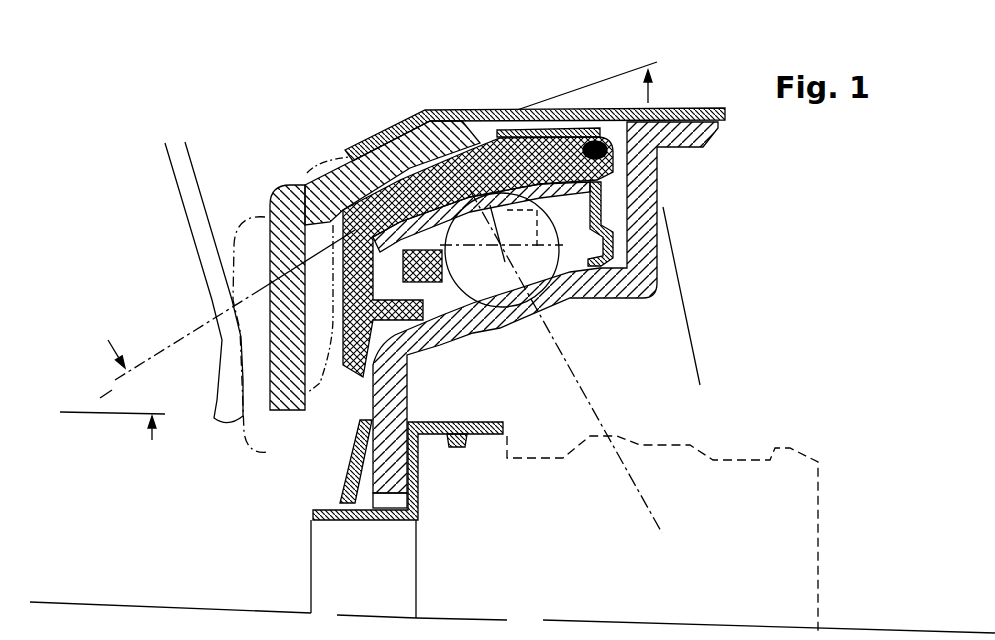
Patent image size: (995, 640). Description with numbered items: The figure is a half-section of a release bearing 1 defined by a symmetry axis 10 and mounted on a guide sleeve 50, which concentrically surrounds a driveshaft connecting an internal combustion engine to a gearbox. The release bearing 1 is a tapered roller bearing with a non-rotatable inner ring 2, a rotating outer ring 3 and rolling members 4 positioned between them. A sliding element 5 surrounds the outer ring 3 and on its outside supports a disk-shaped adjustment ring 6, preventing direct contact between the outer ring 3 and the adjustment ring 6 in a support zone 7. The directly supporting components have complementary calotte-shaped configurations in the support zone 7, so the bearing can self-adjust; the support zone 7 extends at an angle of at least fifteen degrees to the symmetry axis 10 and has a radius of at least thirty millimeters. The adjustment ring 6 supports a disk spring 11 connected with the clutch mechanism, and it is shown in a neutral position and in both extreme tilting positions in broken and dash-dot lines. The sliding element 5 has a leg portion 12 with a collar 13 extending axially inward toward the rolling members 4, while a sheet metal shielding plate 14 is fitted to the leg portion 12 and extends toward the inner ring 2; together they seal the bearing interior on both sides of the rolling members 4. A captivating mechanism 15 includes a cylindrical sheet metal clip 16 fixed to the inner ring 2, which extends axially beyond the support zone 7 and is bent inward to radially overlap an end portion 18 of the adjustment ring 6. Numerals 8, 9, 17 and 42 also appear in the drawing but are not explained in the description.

The release bearing 1 is at (338, 131).
The inner ring 2 is at (660, 217).
The outer ring 3 is at (590, 175).
The rolling members 4 is at (548, 300).
The sliding element 5 is at (280, 195).
The adjustment ring 6 is at (303, 412).
The support zone 7 is at (410, 160).
The sealing lip 8 is at (423, 177).
The insert 9 is at (457, 140).
The symmetry axis 10 is at (478, 618).
The disk spring 11 is at (190, 226).
The leg portion 12 is at (350, 372).
The collar 13 is at (473, 332).
The shielding plate 14 is at (628, 300).
The captivating mechanism 15 is at (327, 127).
The clip 16 is at (503, 110).
The retaining sheet 17 is at (366, 118).
The end portion 18 is at (350, 157).
The sealing ring 42 is at (607, 153).
The guide sleeve 50 is at (312, 520).